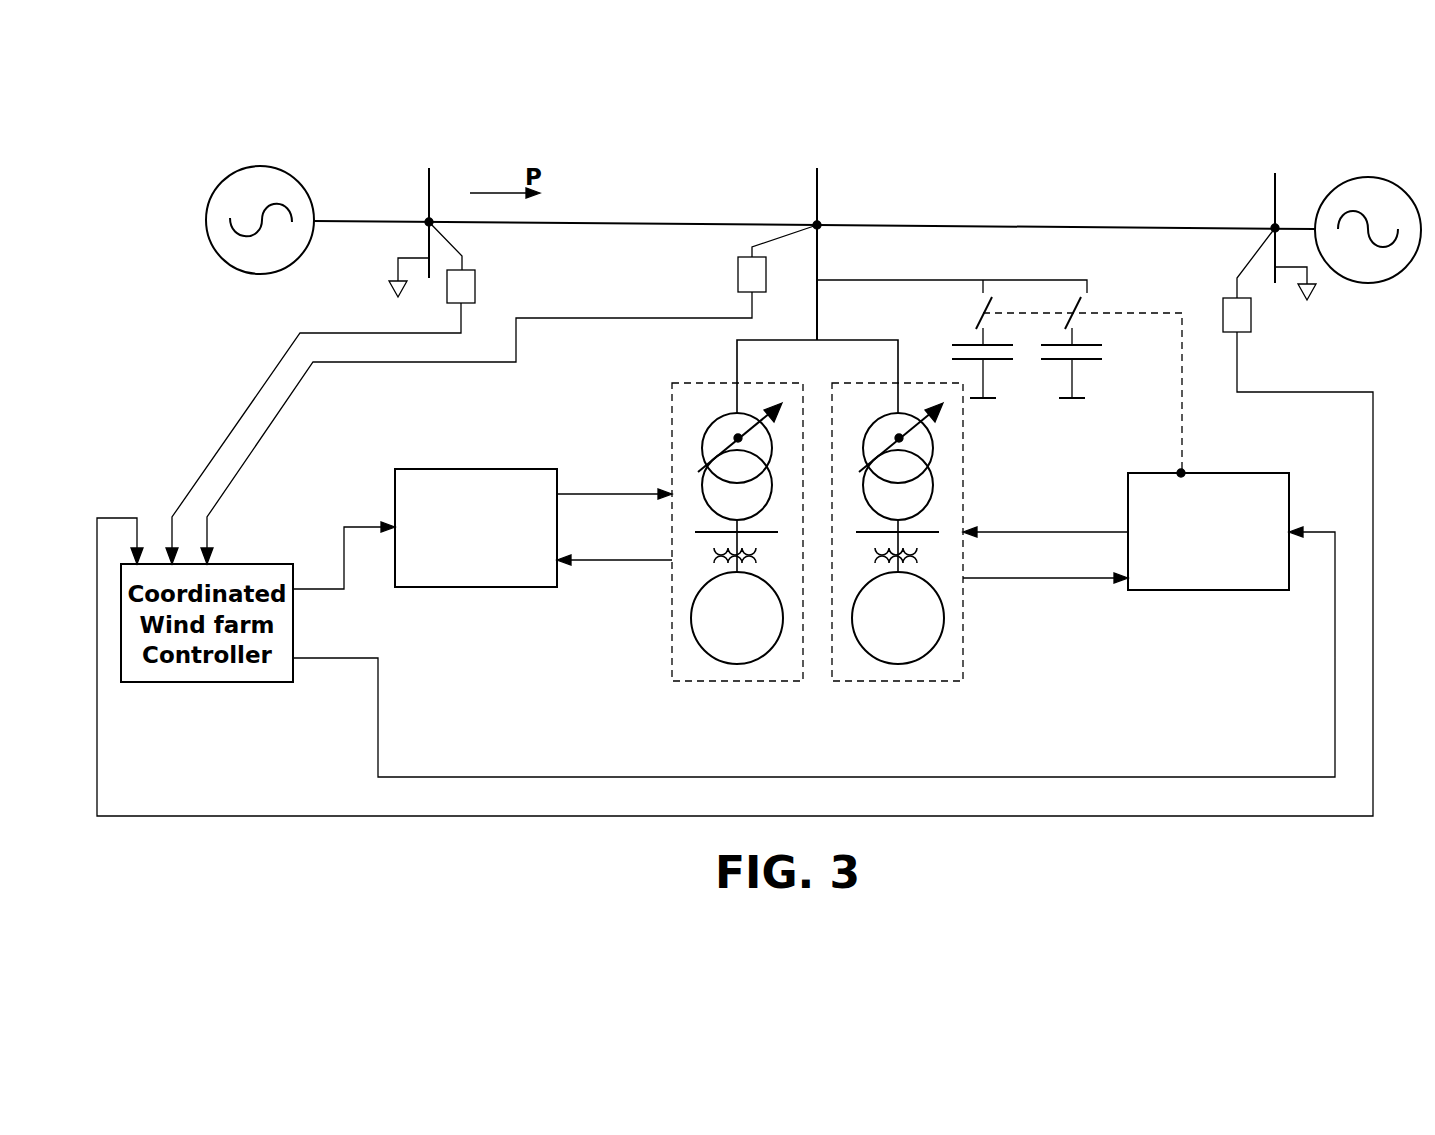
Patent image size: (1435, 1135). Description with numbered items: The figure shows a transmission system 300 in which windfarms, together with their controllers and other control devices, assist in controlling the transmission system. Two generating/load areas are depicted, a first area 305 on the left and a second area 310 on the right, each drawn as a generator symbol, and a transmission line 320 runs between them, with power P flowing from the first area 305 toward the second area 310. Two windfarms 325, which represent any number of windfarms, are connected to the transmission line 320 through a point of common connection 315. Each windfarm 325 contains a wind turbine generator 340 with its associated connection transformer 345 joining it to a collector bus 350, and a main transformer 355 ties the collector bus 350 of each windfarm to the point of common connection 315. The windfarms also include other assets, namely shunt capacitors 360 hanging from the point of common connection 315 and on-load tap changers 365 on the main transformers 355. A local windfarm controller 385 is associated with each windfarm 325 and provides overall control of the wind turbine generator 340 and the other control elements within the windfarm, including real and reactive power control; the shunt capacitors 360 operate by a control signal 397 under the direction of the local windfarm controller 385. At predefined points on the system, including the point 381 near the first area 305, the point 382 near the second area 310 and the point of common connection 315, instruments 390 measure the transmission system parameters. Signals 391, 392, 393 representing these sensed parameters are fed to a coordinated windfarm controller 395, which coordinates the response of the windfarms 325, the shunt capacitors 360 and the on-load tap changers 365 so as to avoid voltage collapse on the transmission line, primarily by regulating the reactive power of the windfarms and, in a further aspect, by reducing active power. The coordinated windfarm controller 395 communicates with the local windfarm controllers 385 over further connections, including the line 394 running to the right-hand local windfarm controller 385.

The transmission system 300 is at (782, 143).
The Area 1 305 is at (200, 258).
The Area 2 310 is at (1402, 293).
The point of common connection 315 is at (819, 225).
The transmission line 320 is at (636, 222).
The windfarm 325 is at (672, 657).
The wind turbine generator 340 is at (706, 654).
The connection transformer 345 is at (704, 553).
The collector bus 350 is at (696, 532).
The main transformer 355 is at (702, 480).
The shunt capacitors 360 is at (1000, 372).
The on-load tap changer 365 is at (736, 437).
The measurement point 381 is at (431, 221).
The second bus node 382 is at (1273, 228).
The local windfarm controller 385 is at (430, 468).
The instruments 390 is at (475, 287).
The signal 391 is at (113, 517).
The signal 392 is at (216, 459).
The signal 393 is at (252, 459).
The signal line 394 is at (1335, 648).
The coordinated windfarm controller 395 is at (296, 588).
The control signal 397 is at (1123, 313).